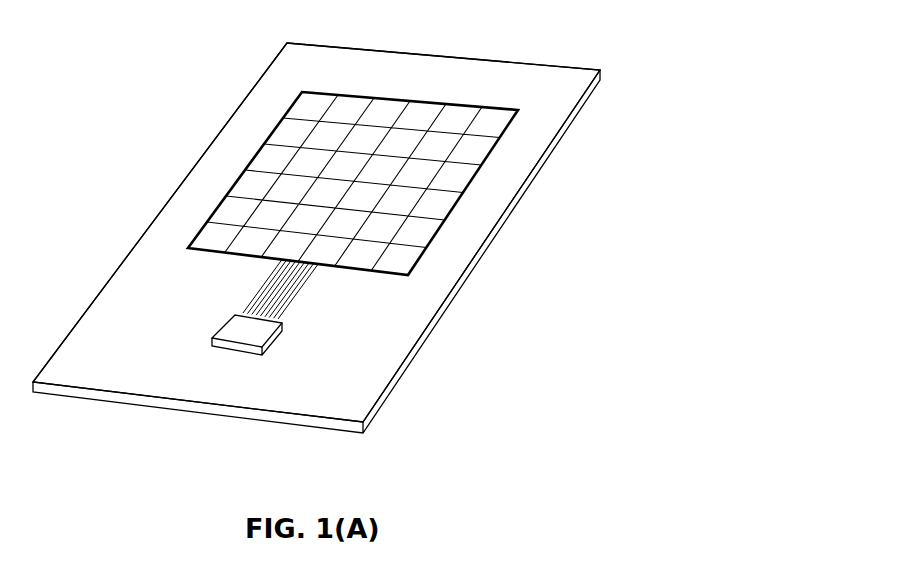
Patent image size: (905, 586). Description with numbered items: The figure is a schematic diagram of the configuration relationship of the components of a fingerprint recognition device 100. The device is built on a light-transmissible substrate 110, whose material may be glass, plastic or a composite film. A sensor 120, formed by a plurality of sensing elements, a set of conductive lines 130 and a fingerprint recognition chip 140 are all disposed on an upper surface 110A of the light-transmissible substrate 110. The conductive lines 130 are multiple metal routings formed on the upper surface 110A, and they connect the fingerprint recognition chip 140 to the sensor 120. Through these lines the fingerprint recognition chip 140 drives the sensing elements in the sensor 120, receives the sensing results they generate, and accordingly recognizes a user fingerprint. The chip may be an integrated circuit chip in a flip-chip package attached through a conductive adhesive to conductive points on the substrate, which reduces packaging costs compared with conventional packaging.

The fingerprint recognition device 100 is at (316, 230).
The light-transmissible substrate 110 is at (558, 65).
The upper surface 110A is at (488, 69).
The sensor 120 is at (304, 111).
The conductive lines 130 is at (257, 298).
The fingerprint recognition chip 140 is at (234, 334).